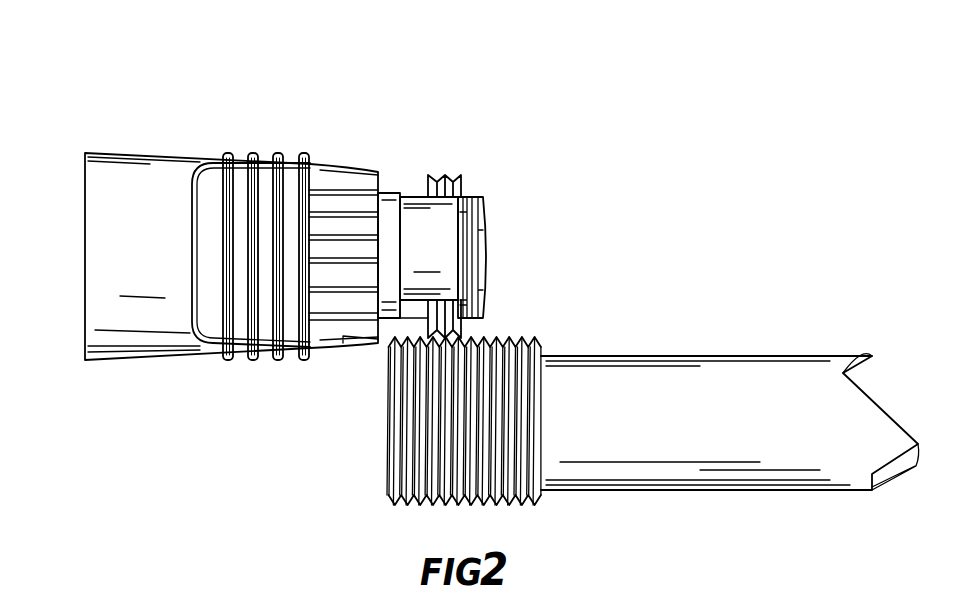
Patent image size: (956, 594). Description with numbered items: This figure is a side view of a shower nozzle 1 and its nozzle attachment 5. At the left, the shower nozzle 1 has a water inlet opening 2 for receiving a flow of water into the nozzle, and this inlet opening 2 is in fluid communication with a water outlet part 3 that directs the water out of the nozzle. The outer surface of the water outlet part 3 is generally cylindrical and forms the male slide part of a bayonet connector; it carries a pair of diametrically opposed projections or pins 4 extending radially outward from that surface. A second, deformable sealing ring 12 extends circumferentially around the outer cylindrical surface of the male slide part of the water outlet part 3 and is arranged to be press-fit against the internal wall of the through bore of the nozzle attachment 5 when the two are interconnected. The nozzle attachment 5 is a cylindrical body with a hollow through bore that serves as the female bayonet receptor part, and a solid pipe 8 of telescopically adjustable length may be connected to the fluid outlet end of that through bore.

The shower nozzle 1 is at (192, 148).
The water inlet opening 2 is at (84, 167).
The water outlet part 3 is at (415, 193).
The pins 4 is at (460, 192).
The second sealing ring 12 is at (480, 196).
The nozzle attachment 5 is at (533, 338).
The solid pipe 8 is at (742, 356).